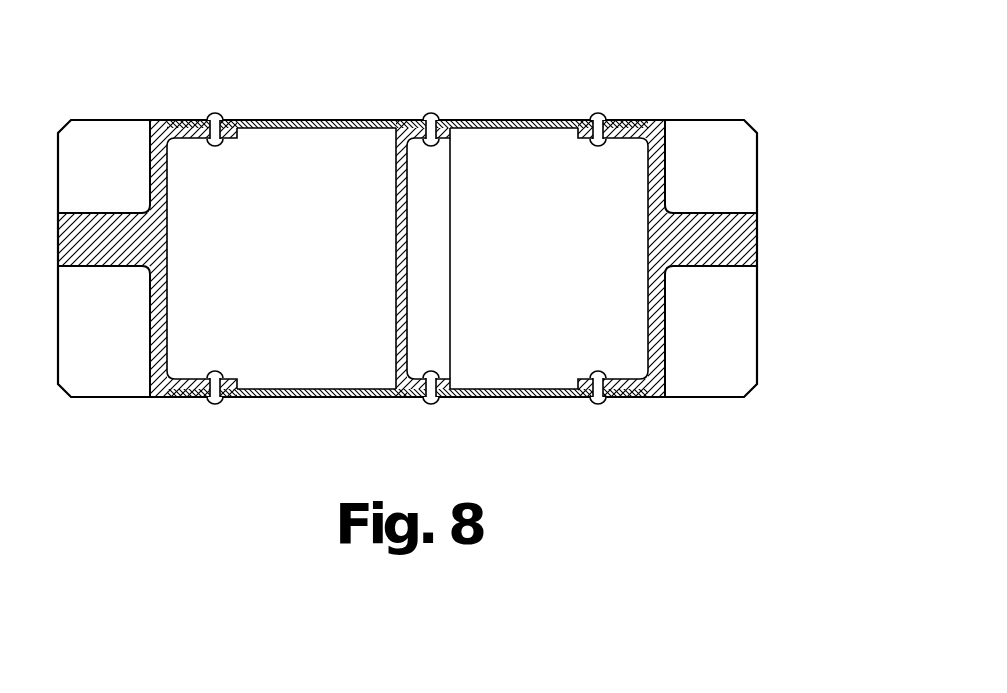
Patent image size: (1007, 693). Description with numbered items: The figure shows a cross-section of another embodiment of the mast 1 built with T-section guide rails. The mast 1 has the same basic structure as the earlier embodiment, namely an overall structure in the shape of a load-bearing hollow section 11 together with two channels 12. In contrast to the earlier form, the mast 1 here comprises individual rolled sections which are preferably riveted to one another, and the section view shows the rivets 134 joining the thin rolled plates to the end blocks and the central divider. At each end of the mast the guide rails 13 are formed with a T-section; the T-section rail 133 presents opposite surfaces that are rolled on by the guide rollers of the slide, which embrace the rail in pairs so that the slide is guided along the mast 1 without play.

The mast 1 is at (160, 120).
The load-bearing hollow section 11 is at (653, 352).
The channels 12 is at (530, 183).
The guide rails 13 is at (730, 233).
The T-section rail 133 is at (668, 168).
The rivets 134 is at (440, 397).